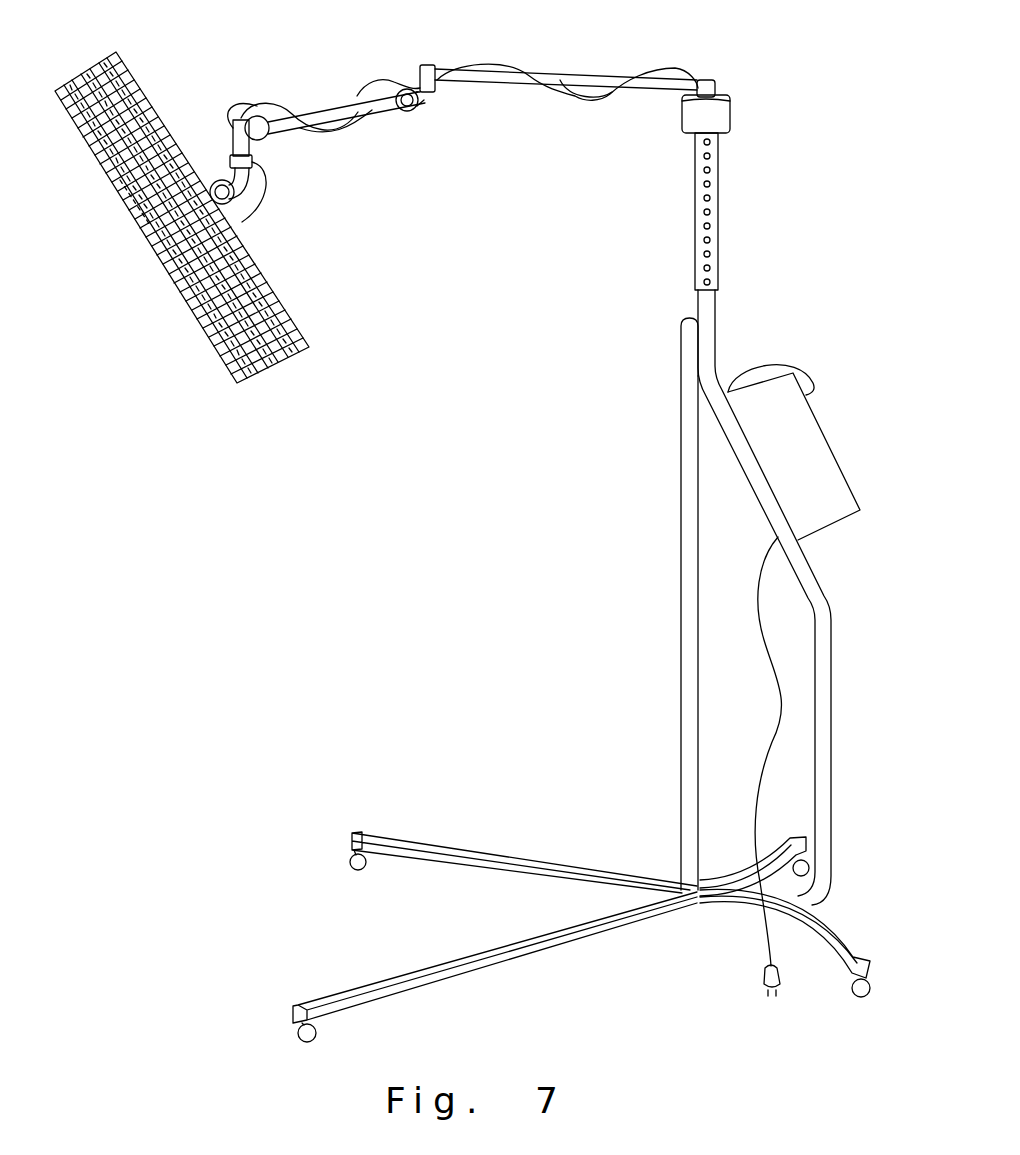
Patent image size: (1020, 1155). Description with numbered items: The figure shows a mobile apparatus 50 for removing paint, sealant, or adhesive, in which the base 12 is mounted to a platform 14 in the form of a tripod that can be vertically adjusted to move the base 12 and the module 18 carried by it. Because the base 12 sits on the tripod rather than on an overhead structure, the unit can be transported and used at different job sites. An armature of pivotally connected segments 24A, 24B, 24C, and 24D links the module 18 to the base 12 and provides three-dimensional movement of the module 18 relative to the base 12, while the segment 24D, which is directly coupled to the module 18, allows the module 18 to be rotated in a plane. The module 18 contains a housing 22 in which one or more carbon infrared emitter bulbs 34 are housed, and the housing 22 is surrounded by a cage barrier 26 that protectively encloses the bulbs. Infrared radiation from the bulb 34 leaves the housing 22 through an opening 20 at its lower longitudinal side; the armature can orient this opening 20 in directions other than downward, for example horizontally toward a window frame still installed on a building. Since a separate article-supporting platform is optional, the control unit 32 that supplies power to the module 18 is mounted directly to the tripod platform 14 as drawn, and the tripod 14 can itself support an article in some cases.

The base 12 is at (748, 112).
The platform 14 is at (731, 324).
The module 18 is at (232, 389).
The opening 20 is at (200, 300).
The housing 22 is at (290, 293).
The segment 24A is at (608, 76).
The segment 24B is at (440, 100).
The segment 24C is at (318, 104).
The segment 24D is at (258, 162).
The cage barrier 26 is at (157, 240).
The control unit 32 is at (835, 409).
The infrared emitter bulb 34 is at (130, 200).
The apparatus 50 is at (152, 739).